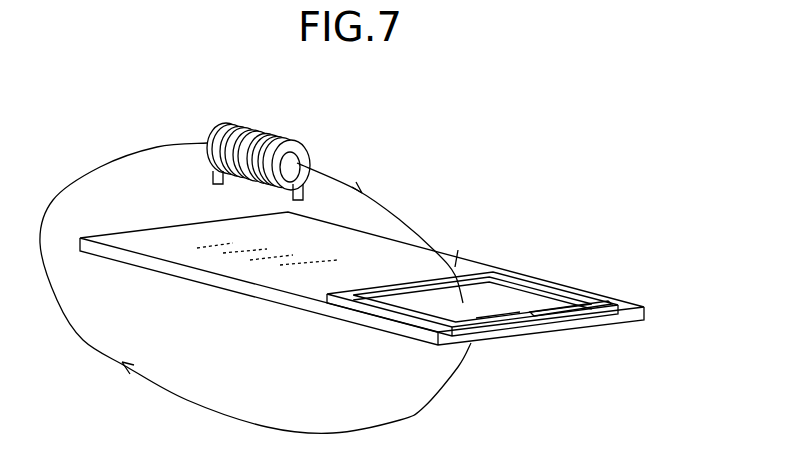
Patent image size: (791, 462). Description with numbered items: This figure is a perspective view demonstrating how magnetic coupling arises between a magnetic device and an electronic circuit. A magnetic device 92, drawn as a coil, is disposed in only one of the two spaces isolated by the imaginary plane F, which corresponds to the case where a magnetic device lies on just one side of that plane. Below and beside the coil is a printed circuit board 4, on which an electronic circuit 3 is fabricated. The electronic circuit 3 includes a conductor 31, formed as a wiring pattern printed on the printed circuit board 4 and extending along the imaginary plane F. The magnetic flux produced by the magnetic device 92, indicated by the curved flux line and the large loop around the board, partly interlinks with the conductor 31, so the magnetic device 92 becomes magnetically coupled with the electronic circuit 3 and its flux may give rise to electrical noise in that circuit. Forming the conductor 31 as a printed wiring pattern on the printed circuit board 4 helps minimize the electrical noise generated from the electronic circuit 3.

The printed circuit board 4 is at (200, 279).
The electronic circuit 3 is at (514, 277).
The conductor 31 is at (563, 293).
The magnetic device 92 is at (260, 130).
The imaginary plane F is at (458, 250).